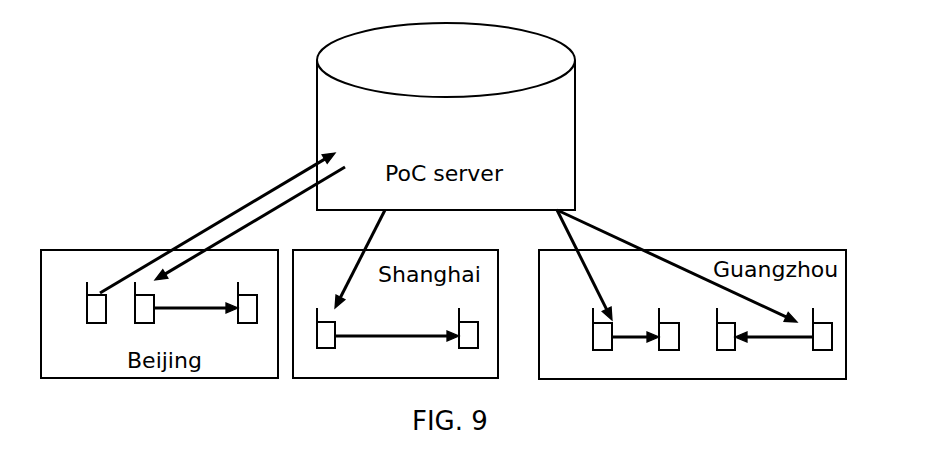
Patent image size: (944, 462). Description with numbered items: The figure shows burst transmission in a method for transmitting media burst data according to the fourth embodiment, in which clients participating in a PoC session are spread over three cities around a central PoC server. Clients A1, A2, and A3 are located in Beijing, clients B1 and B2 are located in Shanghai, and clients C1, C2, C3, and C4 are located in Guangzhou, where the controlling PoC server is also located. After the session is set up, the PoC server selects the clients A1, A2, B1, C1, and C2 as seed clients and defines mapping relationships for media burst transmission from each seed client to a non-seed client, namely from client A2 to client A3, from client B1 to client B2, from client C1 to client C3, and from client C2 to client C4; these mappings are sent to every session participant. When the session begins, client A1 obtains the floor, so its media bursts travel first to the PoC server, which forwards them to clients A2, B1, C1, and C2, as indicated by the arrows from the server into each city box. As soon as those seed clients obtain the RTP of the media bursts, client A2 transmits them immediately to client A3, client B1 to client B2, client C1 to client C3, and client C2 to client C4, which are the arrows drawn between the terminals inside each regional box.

The client A1 is at (86, 323).
The client A2 is at (145, 328).
The client A3 is at (237, 327).
The client B1 is at (320, 350).
The client B2 is at (463, 350).
The client C1 is at (600, 352).
The client C2 is at (715, 352).
The client C3 is at (672, 318).
The client C4 is at (825, 352).